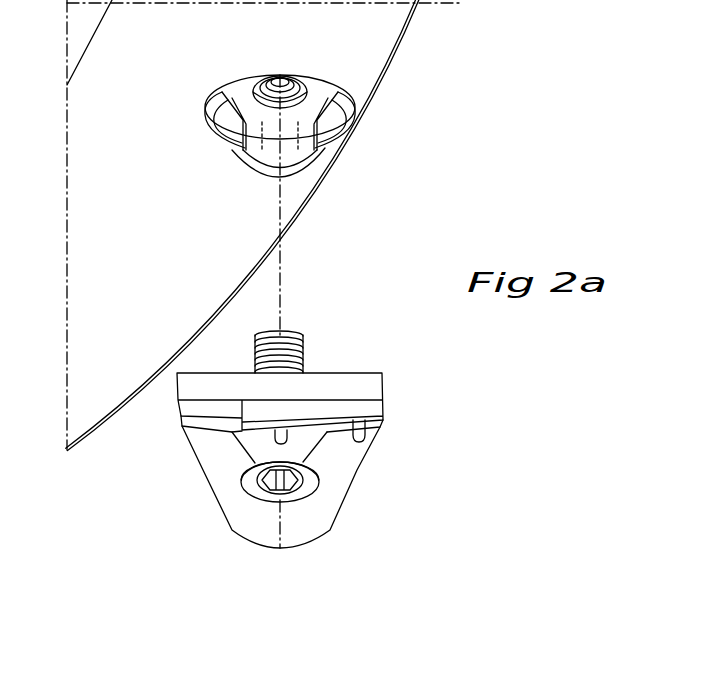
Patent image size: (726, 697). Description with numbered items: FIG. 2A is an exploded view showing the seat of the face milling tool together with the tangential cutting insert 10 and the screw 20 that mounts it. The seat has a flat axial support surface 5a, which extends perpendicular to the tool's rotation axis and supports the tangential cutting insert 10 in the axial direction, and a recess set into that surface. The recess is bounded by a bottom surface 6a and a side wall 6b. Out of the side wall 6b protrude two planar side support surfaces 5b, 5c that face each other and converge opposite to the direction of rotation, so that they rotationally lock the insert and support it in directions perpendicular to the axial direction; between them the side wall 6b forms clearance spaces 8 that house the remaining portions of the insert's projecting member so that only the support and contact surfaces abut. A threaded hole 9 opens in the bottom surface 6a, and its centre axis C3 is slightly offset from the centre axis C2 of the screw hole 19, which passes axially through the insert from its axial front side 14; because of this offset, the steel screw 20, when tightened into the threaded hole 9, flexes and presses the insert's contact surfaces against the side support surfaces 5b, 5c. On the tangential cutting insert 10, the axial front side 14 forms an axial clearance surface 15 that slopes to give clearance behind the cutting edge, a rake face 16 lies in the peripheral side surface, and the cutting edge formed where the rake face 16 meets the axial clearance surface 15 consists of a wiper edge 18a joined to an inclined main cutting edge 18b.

The flat axial support surface 5a is at (291, 127).
The side support surface 5b is at (235, 117).
The side support surface 5c is at (327, 116).
The bottom surface 6a is at (252, 88).
The side wall 6b is at (189, 127).
The clearance spaces 8 is at (287, 143).
The threaded hole 9 is at (293, 84).
The centre axis of the screw hole C2 is at (281, 310).
The centre axis of the threaded hole C3 is at (278, 178).
The tangential cutting insert 10 is at (316, 488).
The axial front side 14 is at (297, 523).
The axial clearance surface 15 is at (224, 480).
The rake face 16 is at (350, 405).
The wiper edge 18a is at (274, 444).
The main cutting edge 18b is at (364, 440).
The screw hole 19 is at (260, 498).
The screw 20 is at (303, 355).